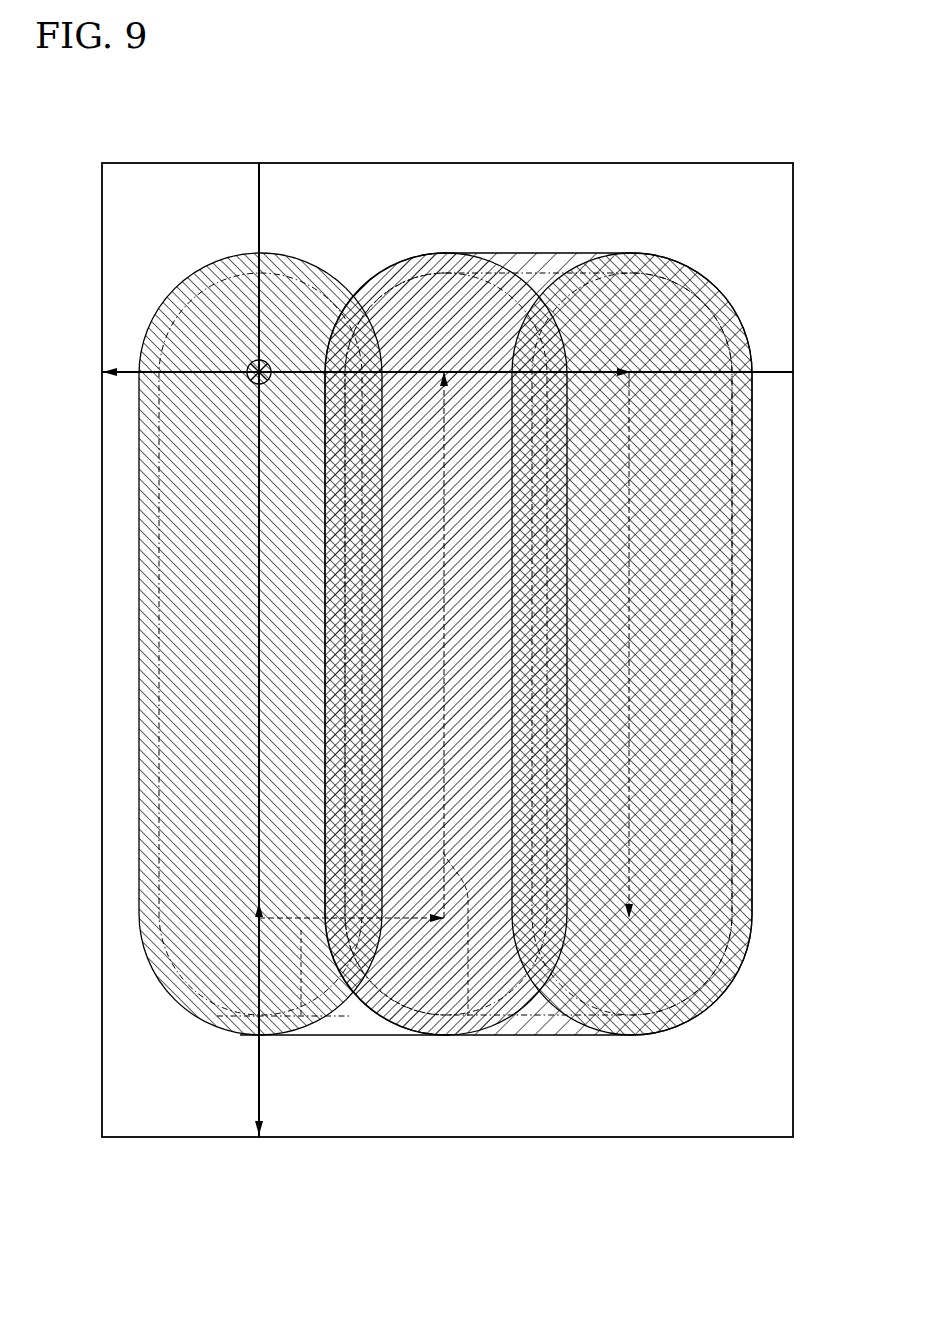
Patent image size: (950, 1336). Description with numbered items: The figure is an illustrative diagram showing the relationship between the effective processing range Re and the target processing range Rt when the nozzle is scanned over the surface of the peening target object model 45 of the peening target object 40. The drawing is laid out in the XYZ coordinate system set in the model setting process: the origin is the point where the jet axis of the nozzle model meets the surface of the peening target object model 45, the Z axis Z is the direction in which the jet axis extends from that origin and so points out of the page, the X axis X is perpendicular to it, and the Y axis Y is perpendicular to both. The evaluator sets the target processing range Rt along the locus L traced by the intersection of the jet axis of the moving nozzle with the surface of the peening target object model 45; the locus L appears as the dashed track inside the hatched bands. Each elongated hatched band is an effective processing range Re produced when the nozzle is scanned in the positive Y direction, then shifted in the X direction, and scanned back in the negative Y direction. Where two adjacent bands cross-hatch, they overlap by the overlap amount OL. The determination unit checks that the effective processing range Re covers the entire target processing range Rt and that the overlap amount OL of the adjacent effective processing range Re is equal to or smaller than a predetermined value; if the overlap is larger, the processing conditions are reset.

The peening target object 40 is at (447, 614).
The peening target object model 45 is at (445, 644).
The locus L is at (488, 370).
The effective processing range Re is at (328, 562).
The target processing range Rt is at (158, 758).
The overlap amount OL is at (410, 705).
The X axis X is at (438, 373).
The Y axis Y is at (259, 665).
The Z axis Z is at (268, 365).